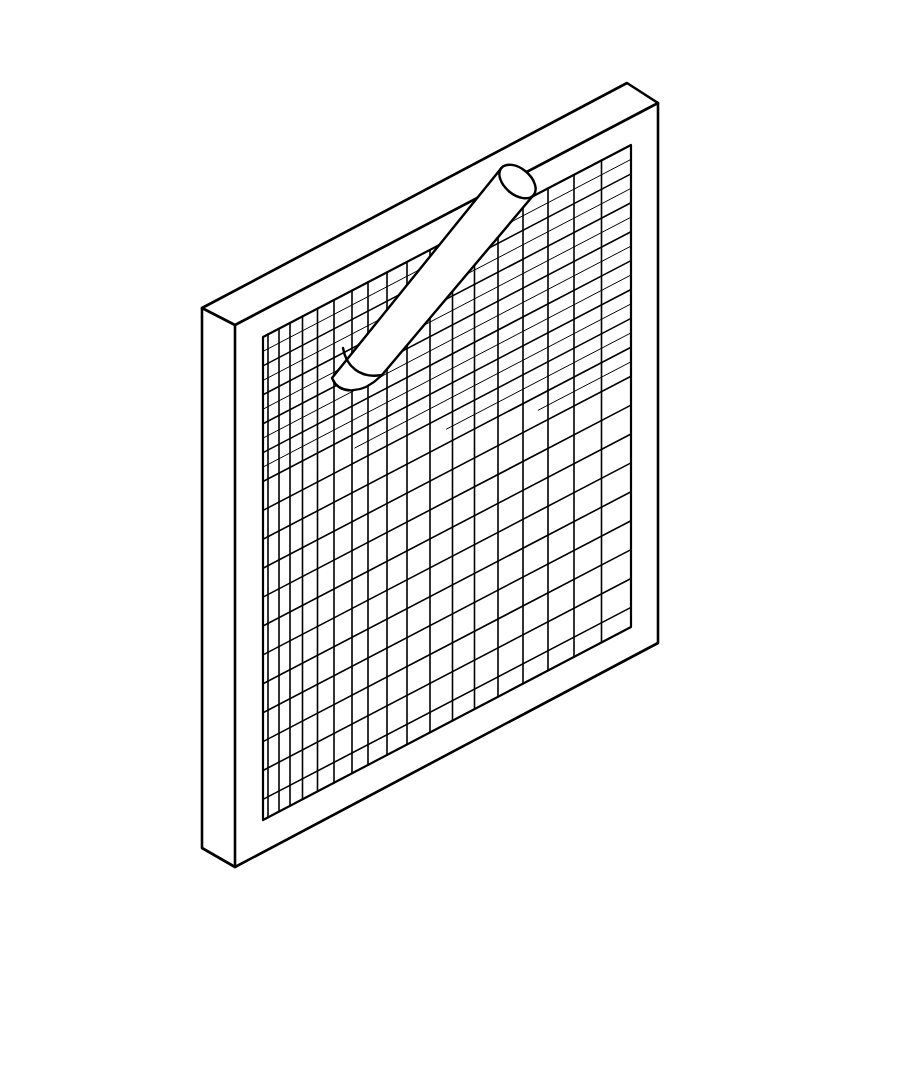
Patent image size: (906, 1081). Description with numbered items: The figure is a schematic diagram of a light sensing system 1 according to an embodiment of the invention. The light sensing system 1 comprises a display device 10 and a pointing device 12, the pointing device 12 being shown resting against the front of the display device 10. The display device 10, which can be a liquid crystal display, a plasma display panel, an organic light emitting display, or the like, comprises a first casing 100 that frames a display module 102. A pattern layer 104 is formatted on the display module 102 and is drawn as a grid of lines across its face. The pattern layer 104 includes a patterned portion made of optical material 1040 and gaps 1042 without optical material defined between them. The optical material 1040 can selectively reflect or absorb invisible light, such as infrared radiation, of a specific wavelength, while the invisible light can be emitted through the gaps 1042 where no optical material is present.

The light sensing system 1 is at (253, 68).
The display device 10 is at (662, 375).
The first casing 100 is at (643, 90).
The display module 102 is at (310, 313).
The pattern layer 104 is at (118, 419).
The optical material 1040 is at (282, 477).
The gaps 1042 is at (282, 490).
The pointing device 12 is at (470, 230).